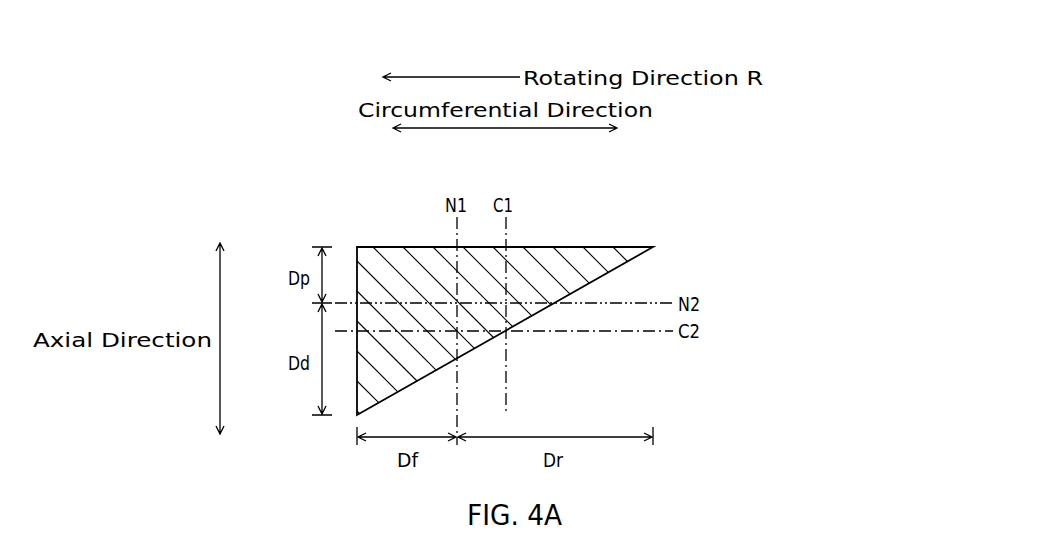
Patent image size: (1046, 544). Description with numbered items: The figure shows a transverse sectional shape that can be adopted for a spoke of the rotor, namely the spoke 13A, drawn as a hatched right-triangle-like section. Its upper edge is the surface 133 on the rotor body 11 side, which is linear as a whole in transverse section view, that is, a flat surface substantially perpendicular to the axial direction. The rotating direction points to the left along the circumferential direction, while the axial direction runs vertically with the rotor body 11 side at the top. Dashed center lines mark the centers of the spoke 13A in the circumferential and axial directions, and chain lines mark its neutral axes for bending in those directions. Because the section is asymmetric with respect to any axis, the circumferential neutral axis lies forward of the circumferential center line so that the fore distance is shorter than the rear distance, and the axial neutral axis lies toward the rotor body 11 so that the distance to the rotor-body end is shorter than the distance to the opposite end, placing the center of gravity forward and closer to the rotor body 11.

The surface on the rotor body side 133 is at (408, 247).
The spoke 13A is at (647, 221).
The rotor body 11 is at (383, 229).